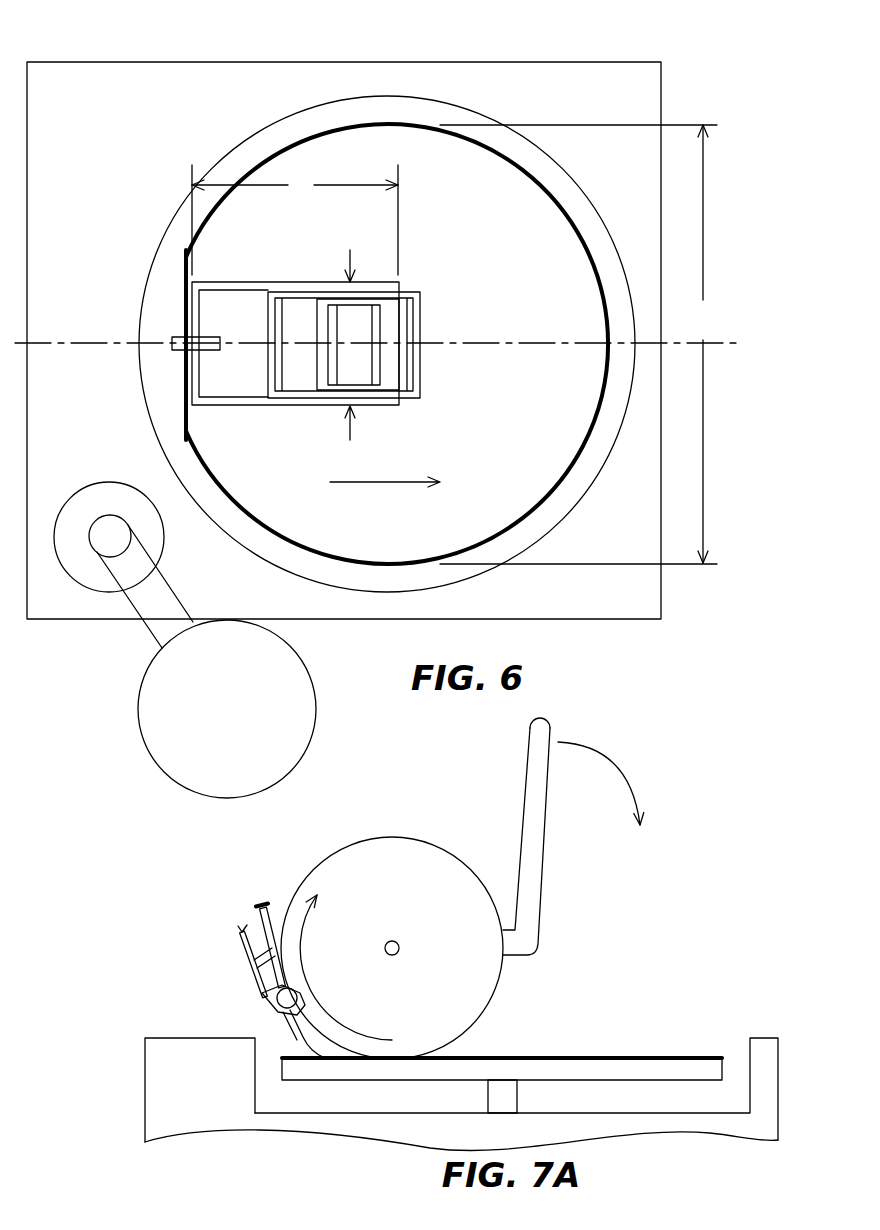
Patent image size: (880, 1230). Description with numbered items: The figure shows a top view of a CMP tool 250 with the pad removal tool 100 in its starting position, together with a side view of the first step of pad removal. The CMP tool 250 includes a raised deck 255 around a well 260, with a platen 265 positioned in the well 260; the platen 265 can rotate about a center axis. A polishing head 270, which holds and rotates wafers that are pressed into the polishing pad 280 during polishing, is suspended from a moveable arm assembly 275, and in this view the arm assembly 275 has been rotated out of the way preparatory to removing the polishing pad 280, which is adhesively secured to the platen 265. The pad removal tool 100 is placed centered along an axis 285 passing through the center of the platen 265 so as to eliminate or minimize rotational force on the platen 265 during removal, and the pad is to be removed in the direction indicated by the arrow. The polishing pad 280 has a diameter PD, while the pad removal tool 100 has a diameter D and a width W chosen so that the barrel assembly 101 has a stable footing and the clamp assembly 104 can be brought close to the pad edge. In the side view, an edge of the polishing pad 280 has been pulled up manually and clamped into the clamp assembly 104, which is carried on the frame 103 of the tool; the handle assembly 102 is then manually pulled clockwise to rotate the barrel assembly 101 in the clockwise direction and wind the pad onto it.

In FIG. 6, the pad removal tool 100 is at (307, 258).
In FIG. 7A, the pad removal tool 100 is at (236, 864).
In FIG. 6, the barrel assembly 101 is at (243, 282).
In FIG. 7A, the barrel assembly 101 is at (361, 917).
In FIG. 6, the handle assembly 102 is at (414, 323).
In FIG. 7A, the handle assembly 102 is at (530, 893).
In FIG. 6, the support frame 103 is at (378, 364).
In FIG. 6, the clamp assembly 104 is at (222, 357).
In FIG. 7A, the clamp assembly 104 is at (250, 976).
In FIG. 6, the CMP tool 250 is at (702, 58).
In FIG. 6, the raised deck 255 is at (50, 112).
In FIG. 7A, the raised deck 255 is at (168, 1080).
In FIG. 6, the well 260 is at (232, 165).
In FIG. 7A, the well 260 is at (737, 1083).
In FIG. 6, the platen 265 is at (178, 318).
In FIG. 7A, the platen 265 is at (620, 1072).
In FIG. 6, the polishing head 270 is at (203, 720).
In FIG. 6, the arm assembly 275 is at (101, 450).
In FIG. 6, the polishing pad 280 is at (428, 235).
In FIG. 7A, the polishing pad 280 is at (538, 1057).
In FIG. 6, the axis 285 is at (728, 343).